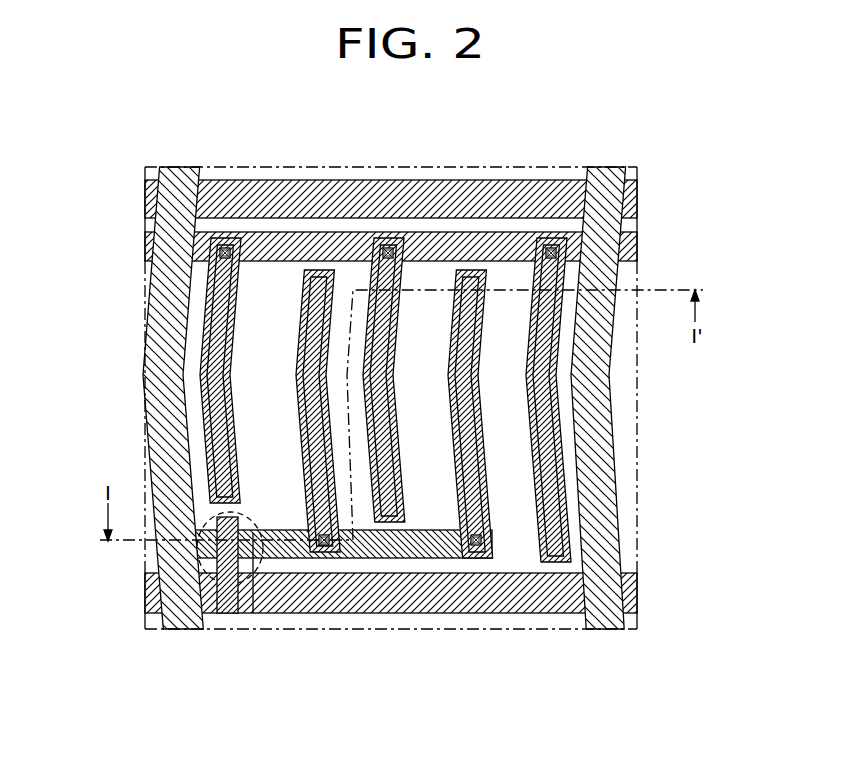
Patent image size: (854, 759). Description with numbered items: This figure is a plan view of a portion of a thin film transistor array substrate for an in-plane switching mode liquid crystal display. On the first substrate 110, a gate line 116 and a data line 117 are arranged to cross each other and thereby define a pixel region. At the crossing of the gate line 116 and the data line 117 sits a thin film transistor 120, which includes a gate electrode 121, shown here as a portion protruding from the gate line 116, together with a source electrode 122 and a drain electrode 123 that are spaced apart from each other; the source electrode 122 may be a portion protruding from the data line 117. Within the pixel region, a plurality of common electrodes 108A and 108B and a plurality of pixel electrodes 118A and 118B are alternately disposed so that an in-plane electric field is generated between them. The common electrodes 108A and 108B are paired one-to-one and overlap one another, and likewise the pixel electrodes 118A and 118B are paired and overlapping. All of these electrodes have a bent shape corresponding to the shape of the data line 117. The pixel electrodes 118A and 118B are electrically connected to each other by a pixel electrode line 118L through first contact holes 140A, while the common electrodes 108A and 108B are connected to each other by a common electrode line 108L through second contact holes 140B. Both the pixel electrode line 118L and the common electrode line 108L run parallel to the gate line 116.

The first substrate 110 is at (654, 159).
The common electrode line 108L is at (640, 245).
The common electrode 108A is at (558, 448).
The common electrode 108B is at (562, 477).
The gate line 116 is at (535, 598).
The data line 117 is at (607, 530).
The pixel electrode line 118L is at (372, 546).
The pixel electrode 118A is at (478, 367).
The pixel electrode 118B is at (480, 396).
The thin film transistor 120 is at (192, 558).
The gate electrode 121 is at (217, 530).
The source electrode 122 is at (209, 618).
The drain electrode 123 is at (253, 613).
The first contact holes 140A is at (474, 547).
The second contact holes 140B is at (548, 250).